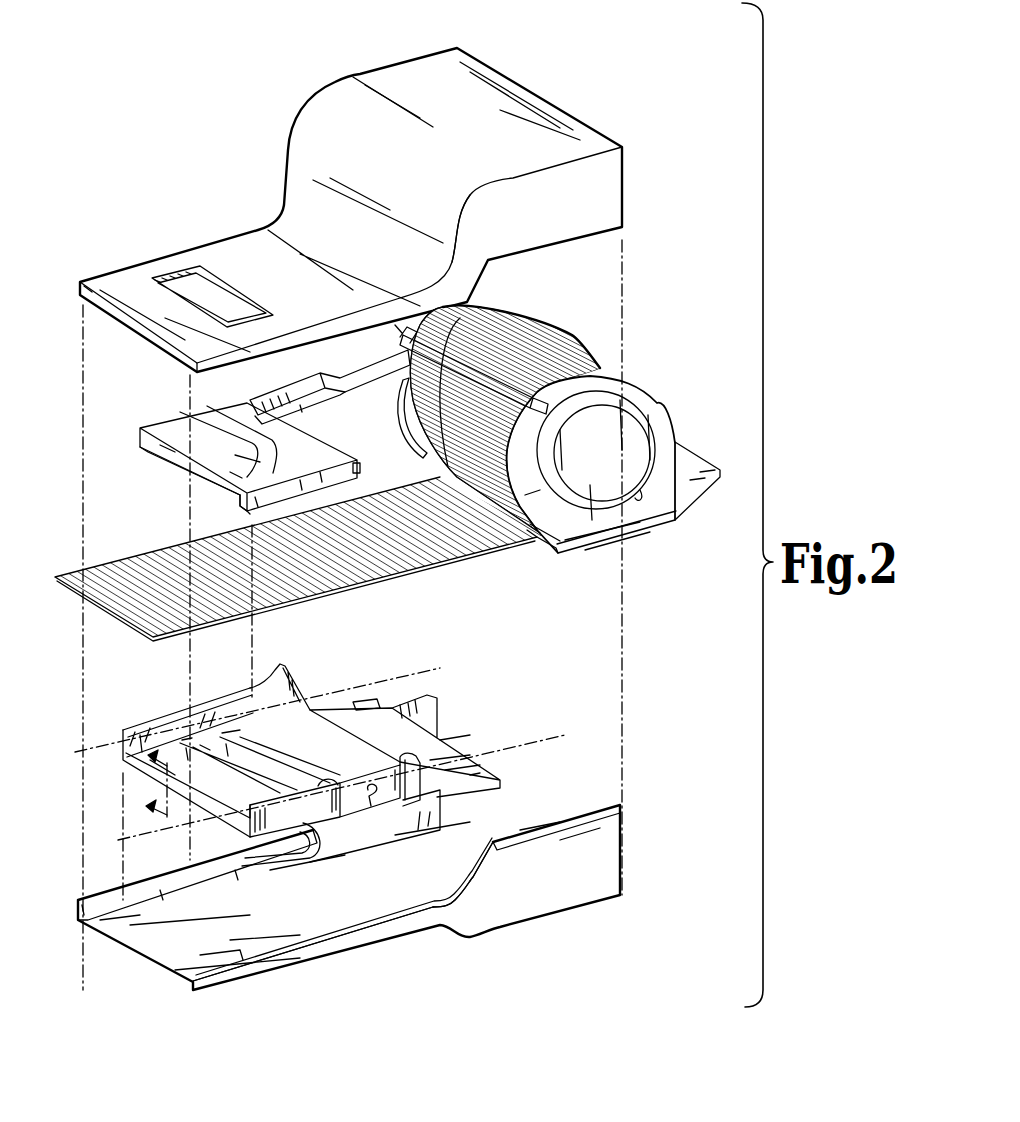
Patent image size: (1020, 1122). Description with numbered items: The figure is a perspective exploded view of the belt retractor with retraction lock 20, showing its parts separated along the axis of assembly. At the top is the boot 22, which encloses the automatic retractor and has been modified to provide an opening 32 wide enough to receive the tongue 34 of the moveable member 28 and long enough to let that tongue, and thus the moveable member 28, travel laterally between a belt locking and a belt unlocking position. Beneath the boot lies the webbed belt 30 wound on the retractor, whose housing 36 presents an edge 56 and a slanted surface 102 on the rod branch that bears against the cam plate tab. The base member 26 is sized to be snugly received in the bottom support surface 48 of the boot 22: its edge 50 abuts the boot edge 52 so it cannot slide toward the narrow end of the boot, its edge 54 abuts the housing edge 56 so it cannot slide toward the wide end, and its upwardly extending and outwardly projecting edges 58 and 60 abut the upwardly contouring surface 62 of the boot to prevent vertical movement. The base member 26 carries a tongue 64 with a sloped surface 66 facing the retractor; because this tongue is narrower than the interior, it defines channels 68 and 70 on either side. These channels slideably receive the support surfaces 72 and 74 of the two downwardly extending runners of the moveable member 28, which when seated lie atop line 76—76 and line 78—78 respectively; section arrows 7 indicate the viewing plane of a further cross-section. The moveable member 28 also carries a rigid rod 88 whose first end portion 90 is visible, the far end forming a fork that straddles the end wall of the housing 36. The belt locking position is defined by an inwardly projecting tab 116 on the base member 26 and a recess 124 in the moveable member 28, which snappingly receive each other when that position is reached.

The belt retractor with retraction lock 20 is at (200, 150).
The boot 22 is at (493, 102).
The base member 26 is at (152, 678).
The moveable member 28 is at (170, 385).
The webbed belt 30 is at (567, 357).
The opening 32 is at (175, 287).
The tongue 34 is at (180, 420).
The housing 36 is at (668, 522).
The bottom support surface 48 is at (340, 910).
The edge 50 is at (397, 810).
The edge 52 is at (388, 903).
The edge 54 is at (457, 750).
The edge 56 is at (547, 543).
The upwardly extending and outwardly projecting edge 58 is at (270, 687).
The upwardly extending and outwardly projecting edge 60 is at (412, 760).
The upwardly contouring surface 62 is at (463, 243).
The tongue 64 is at (210, 743).
The sloped surface 66 is at (237, 740).
The channel 68 is at (200, 740).
The channel 70 is at (337, 790).
The support surface 72 is at (145, 443).
The support surface 74 is at (246, 510).
The line 76- 76 is at (432, 672).
The line 78- 78 is at (560, 736).
The section line for FIG. 7 is at (165, 797).
The rigid rod 88 is at (303, 395).
The first end portion 90 is at (263, 400).
The slanted surface 102 is at (400, 367).
The tab 116 is at (370, 795).
The recess 124 is at (360, 476).